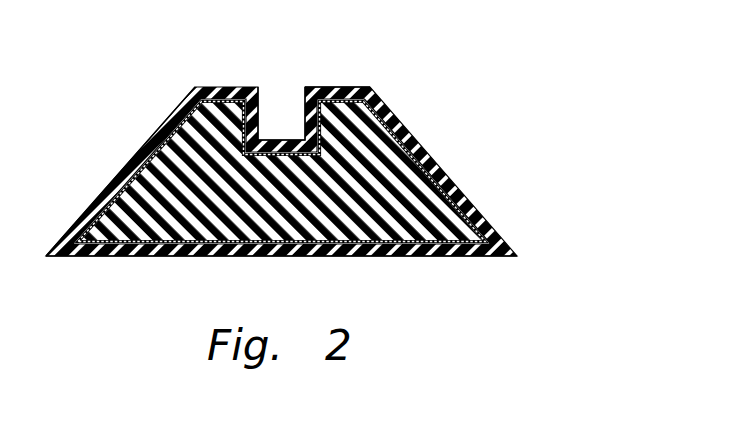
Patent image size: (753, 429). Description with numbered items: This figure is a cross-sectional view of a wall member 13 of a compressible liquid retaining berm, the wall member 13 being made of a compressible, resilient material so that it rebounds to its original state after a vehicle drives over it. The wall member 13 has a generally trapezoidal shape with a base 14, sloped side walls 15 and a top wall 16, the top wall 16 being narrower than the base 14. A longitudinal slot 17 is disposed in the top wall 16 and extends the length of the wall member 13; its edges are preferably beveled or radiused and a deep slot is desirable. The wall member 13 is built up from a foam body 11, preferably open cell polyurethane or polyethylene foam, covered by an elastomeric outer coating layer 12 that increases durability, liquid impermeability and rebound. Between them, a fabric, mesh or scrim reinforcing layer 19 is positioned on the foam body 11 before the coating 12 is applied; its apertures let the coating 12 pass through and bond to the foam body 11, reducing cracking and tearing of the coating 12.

The foam body 11 is at (193, 104).
The elastomeric outer coating layer 12 is at (113, 181).
The wall member 13 is at (334, 173).
The base 14 is at (452, 257).
The sloped side walls 15 is at (137, 152).
The top wall 16 is at (338, 92).
The longitudinal slot 17 is at (302, 108).
The reinforcing layer 19 is at (392, 132).